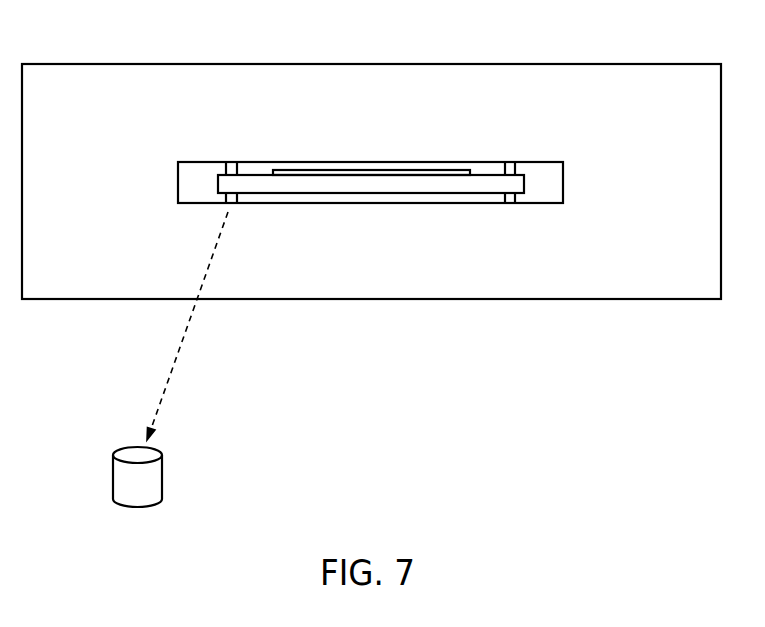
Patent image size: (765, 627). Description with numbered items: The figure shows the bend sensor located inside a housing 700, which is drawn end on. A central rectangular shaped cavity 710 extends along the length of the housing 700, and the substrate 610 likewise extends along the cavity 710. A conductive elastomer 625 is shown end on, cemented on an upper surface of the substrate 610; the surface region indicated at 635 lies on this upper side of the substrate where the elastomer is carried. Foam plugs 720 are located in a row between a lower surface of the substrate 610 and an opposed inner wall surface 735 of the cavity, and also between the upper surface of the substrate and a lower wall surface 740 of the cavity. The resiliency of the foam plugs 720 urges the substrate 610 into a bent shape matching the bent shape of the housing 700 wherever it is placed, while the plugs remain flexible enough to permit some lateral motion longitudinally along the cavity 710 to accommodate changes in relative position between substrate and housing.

The housing 700 is at (126, 88).
The cavity 710 is at (202, 173).
The lower wall surface 740 is at (258, 162).
The substrate 610 is at (463, 185).
The inner wall surface 735 is at (275, 204).
The conductive elastomer 625 is at (322, 170).
The surface 635 is at (370, 172).
The foam plugs 720 is at (148, 482).